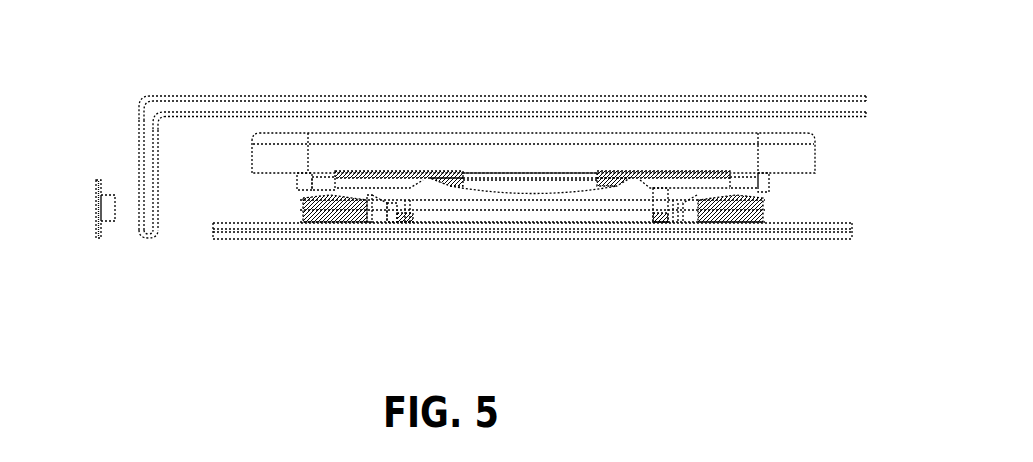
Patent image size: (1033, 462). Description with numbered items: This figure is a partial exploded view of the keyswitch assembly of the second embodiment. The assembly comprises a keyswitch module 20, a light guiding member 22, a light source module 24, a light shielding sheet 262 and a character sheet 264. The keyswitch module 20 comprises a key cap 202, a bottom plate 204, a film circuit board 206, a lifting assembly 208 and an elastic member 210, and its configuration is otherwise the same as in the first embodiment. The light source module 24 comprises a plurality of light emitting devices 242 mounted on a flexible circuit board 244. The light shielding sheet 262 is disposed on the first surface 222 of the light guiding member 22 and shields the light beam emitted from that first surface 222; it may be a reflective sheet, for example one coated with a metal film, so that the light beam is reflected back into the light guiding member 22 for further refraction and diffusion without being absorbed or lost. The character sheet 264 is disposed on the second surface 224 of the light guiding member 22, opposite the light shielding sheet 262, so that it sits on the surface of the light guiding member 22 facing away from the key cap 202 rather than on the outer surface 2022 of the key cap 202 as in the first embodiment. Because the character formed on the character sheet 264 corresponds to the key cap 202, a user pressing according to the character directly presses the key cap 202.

The keyswitch module 20 is at (299, 246).
The light guiding member 22 is at (149, 236).
The light source module 24 is at (98, 171).
The key cap 202 is at (800, 158).
The bottom plate 204 is at (851, 237).
The film circuit board 206 is at (840, 227).
The lifting assembly 208 is at (766, 190).
The elastic member 210 is at (567, 188).
The first surface 222 is at (261, 113).
The second surface 224 is at (310, 100).
The light emitting devices 242 is at (109, 220).
The flexible circuit board 244 is at (97, 208).
The light shielding sheet 262 is at (215, 114).
The character sheet 264 is at (438, 97).
The outer surface 2022 is at (785, 131).